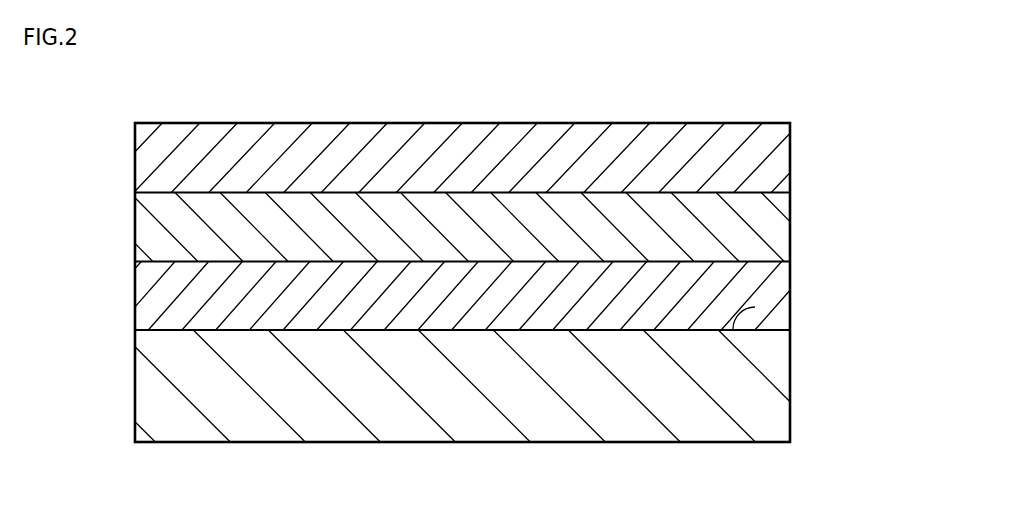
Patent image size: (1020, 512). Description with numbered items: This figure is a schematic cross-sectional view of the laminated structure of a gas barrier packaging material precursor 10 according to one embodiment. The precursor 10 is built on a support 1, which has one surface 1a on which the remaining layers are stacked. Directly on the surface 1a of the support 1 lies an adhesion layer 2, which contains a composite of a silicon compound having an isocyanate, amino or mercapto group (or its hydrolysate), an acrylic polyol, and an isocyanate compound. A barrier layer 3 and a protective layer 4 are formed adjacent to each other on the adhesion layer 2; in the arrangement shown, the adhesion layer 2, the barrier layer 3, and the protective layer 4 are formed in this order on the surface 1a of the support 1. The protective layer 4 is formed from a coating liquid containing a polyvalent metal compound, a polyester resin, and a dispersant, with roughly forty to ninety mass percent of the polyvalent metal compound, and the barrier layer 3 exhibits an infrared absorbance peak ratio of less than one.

The gas barrier packaging material precursor 10 is at (845, 123).
The protective layer 4 is at (763, 157).
The barrier layer 3 is at (763, 227).
The adhesion layer 2 is at (763, 285).
The surface 1a is at (745, 309).
The support 1 is at (763, 384).